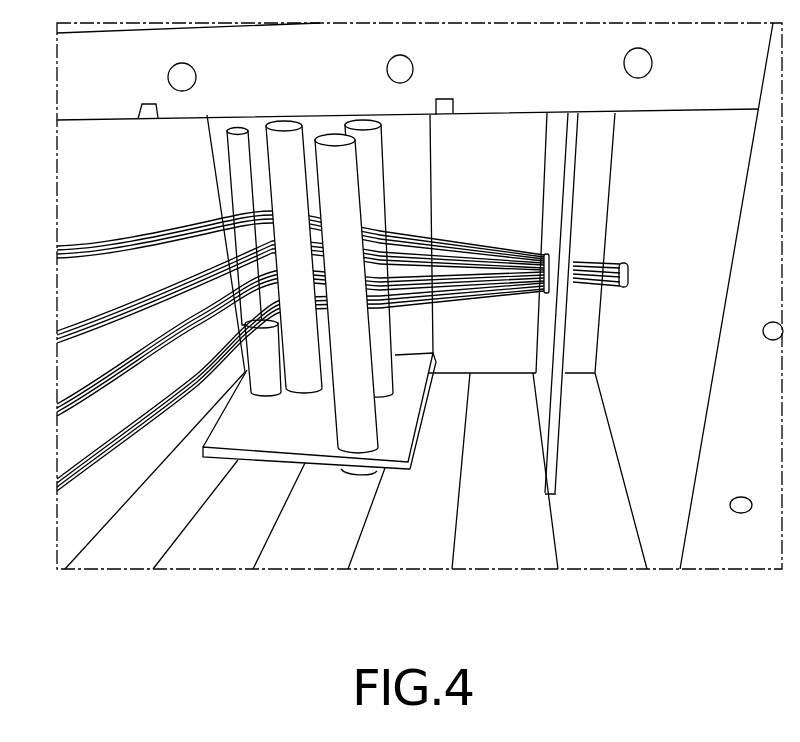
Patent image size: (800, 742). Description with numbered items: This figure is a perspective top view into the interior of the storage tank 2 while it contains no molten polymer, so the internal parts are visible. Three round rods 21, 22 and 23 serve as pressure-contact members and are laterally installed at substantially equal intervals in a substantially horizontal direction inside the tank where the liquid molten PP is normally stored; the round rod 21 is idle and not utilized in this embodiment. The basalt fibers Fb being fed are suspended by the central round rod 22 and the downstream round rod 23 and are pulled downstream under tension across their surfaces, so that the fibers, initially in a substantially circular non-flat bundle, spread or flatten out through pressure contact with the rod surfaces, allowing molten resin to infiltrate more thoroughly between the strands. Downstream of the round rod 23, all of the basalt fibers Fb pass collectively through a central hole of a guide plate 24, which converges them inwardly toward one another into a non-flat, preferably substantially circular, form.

The storage tank 2 is at (513, 153).
The round rod 21 is at (237, 160).
The central round rod 22 is at (285, 181).
The round rod 23 is at (368, 155).
The guide plate 24 is at (556, 340).
The basalt fibers Fb is at (104, 243).